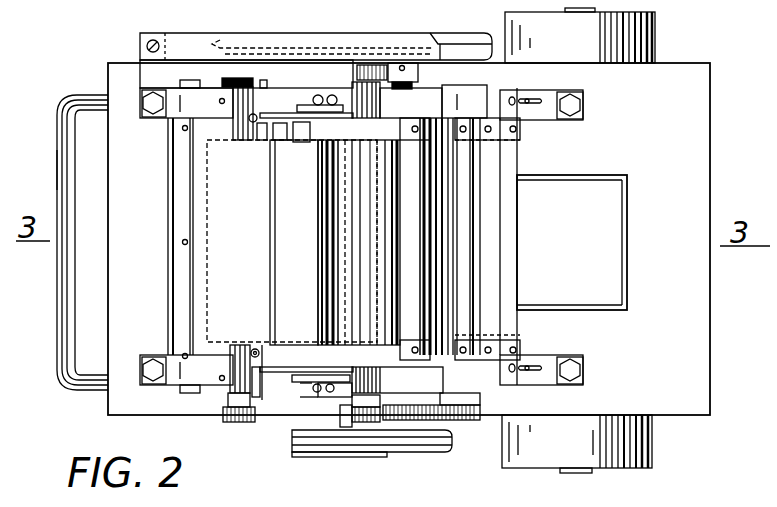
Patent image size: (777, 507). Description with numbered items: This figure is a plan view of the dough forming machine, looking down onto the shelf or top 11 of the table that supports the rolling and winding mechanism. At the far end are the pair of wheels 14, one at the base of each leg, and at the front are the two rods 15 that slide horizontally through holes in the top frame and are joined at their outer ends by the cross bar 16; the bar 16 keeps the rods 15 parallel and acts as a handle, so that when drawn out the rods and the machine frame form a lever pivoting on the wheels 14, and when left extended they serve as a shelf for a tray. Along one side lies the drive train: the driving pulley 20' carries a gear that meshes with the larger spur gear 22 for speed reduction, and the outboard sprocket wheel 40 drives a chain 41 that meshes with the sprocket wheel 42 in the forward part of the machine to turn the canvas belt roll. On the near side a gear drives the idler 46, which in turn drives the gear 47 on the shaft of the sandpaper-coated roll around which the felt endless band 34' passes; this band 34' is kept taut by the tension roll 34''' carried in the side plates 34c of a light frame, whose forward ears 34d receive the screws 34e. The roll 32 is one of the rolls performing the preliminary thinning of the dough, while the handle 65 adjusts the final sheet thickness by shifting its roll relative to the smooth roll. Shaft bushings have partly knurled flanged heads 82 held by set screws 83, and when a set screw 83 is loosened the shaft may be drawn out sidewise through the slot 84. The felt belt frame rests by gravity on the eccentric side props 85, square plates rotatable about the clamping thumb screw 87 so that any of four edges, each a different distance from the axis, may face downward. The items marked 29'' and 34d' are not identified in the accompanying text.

The table top 11 is at (698, 384).
The wheels 14 is at (648, 40).
The rods 15 is at (91, 95).
The cross bar 16 is at (57, 170).
The driving pulley 20' is at (372, 461).
The spur gear 22 is at (468, 420).
The shaft bracket 29'' is at (563, 237).
The roll 32 is at (448, 228).
The endless band 34' is at (273, 242).
The tension roll 34''' is at (312, 242).
The side plates 34c is at (268, 342).
The ears 34d is at (246, 147).
The roller pivot 34d' is at (271, 410).
The screws 34e is at (243, 115).
The sprocket wheel 40 is at (438, 32).
The chain 41 is at (317, 43).
The sprocket wheel 42 is at (222, 42).
The idler 46 is at (397, 380).
The gear 47 is at (347, 337).
The handle 65 is at (442, 87).
The flanged heads 82 is at (228, 421).
The set screws 83 is at (193, 400).
The slot 84 is at (222, 380).
The side props 85 is at (312, 385).
The clamping thumb screw 87 is at (315, 398).